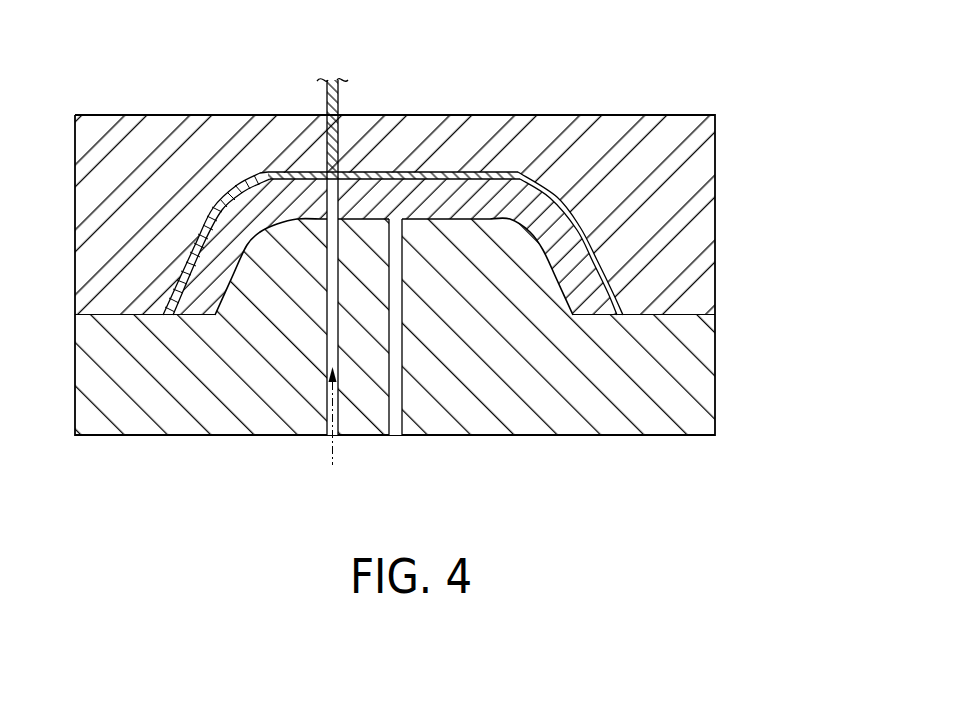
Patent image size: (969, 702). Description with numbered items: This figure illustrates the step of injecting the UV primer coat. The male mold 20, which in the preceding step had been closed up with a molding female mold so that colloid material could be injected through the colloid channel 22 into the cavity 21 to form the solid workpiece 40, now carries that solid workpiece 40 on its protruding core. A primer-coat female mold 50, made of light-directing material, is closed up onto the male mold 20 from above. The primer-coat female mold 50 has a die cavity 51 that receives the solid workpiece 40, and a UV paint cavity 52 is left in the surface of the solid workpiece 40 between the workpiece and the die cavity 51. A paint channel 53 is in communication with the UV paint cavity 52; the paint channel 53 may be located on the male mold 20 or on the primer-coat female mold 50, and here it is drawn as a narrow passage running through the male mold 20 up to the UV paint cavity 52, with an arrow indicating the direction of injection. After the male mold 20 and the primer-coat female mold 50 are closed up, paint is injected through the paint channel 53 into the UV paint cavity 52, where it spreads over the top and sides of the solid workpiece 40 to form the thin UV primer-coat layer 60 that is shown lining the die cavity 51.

The male mold 20 is at (641, 416).
The cavity 21 is at (561, 291).
The colloid channel 22 is at (397, 380).
The solid workpiece 40 is at (441, 190).
The primer-coat female mold 50 is at (683, 117).
The die cavity 51 is at (523, 170).
The UV paint cavity 52 is at (380, 173).
The paint channel 53 is at (335, 343).
The UV primer-coat layer 60 is at (258, 175).